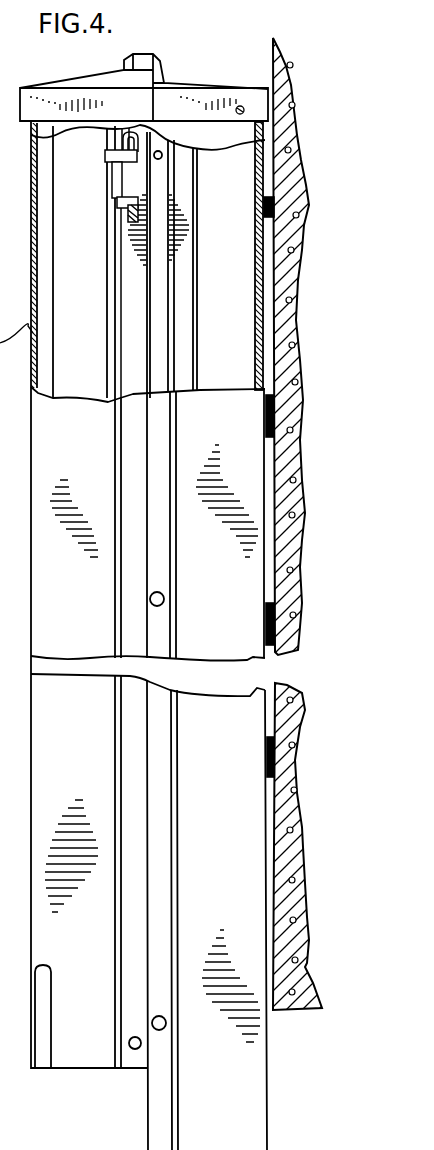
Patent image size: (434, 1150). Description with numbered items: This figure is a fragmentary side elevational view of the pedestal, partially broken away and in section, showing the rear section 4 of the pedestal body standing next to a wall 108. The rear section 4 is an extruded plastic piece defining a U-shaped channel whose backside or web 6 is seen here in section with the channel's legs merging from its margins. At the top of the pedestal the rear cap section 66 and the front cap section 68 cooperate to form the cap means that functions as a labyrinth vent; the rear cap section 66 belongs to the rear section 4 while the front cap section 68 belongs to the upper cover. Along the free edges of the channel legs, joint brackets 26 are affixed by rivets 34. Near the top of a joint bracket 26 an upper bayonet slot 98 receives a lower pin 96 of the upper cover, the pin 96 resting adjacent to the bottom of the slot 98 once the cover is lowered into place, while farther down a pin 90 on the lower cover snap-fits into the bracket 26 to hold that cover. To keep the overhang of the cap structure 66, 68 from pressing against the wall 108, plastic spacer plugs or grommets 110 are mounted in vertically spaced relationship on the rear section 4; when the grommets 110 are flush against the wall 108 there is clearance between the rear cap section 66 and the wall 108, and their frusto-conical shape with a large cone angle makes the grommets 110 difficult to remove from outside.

The front cap section 68 is at (80, 83).
The rear cap section 66 is at (226, 77).
The joint bracket 26 is at (128, 338).
The upper bayonet slot 98 is at (126, 197).
The lower pin 96 is at (126, 212).
The rivet 34 is at (163, 155).
The web 6 is at (257, 357).
The grommet 110 is at (265, 203).
The wall 108 is at (299, 1013).
The pin 90 is at (139, 1050).
The rear section 4 is at (270, 1123).